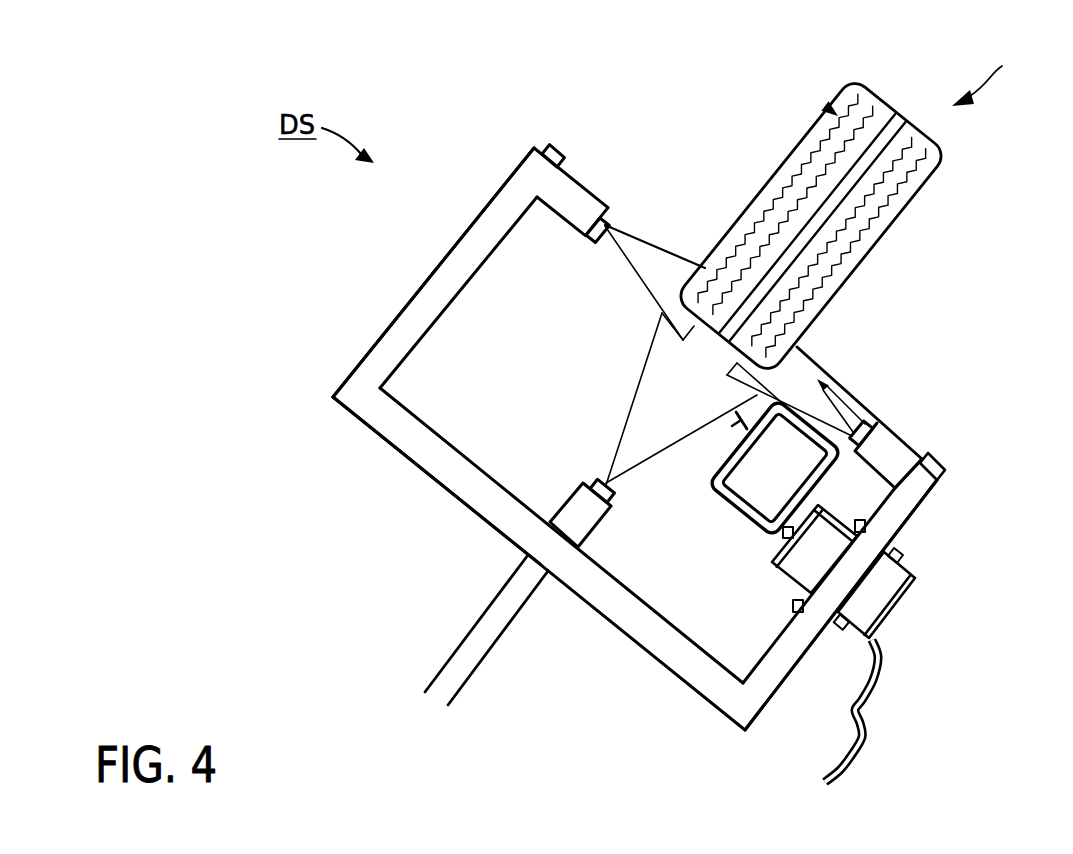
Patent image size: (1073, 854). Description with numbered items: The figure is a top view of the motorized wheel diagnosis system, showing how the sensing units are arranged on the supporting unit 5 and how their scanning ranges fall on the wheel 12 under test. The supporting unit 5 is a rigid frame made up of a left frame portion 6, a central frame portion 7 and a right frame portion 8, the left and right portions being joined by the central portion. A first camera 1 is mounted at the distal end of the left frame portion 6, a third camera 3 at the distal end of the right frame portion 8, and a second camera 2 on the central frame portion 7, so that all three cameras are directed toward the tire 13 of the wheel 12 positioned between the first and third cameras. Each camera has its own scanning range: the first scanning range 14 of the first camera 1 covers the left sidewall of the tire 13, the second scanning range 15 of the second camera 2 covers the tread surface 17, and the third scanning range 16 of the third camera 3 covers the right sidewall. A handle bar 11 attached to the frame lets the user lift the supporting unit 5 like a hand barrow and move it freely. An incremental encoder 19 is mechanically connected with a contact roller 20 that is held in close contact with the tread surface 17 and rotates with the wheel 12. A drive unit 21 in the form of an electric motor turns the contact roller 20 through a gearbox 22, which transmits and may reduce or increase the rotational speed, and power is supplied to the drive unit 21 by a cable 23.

The first camera 1 is at (580, 194).
The second camera 2 is at (577, 494).
The third camera 3 is at (902, 453).
The supporting unit 5 is at (656, 676).
The left frame portion 6 is at (393, 341).
The central frame portion 7 is at (397, 434).
The right frame portion 8 is at (768, 683).
The handle bar 11 is at (479, 641).
The wheel 12 is at (1033, 75).
The tire 13 is at (928, 186).
The first scanning range 14 is at (668, 253).
The second scanning range 15 is at (645, 400).
The third scanning range 16 is at (816, 380).
The tread surface 17 is at (822, 100).
The incremental encoder 19 is at (735, 418).
The contact roller 20 is at (741, 420).
The drive unit 21 is at (878, 588).
The gearbox 22 is at (745, 506).
The cable 23 is at (870, 692).